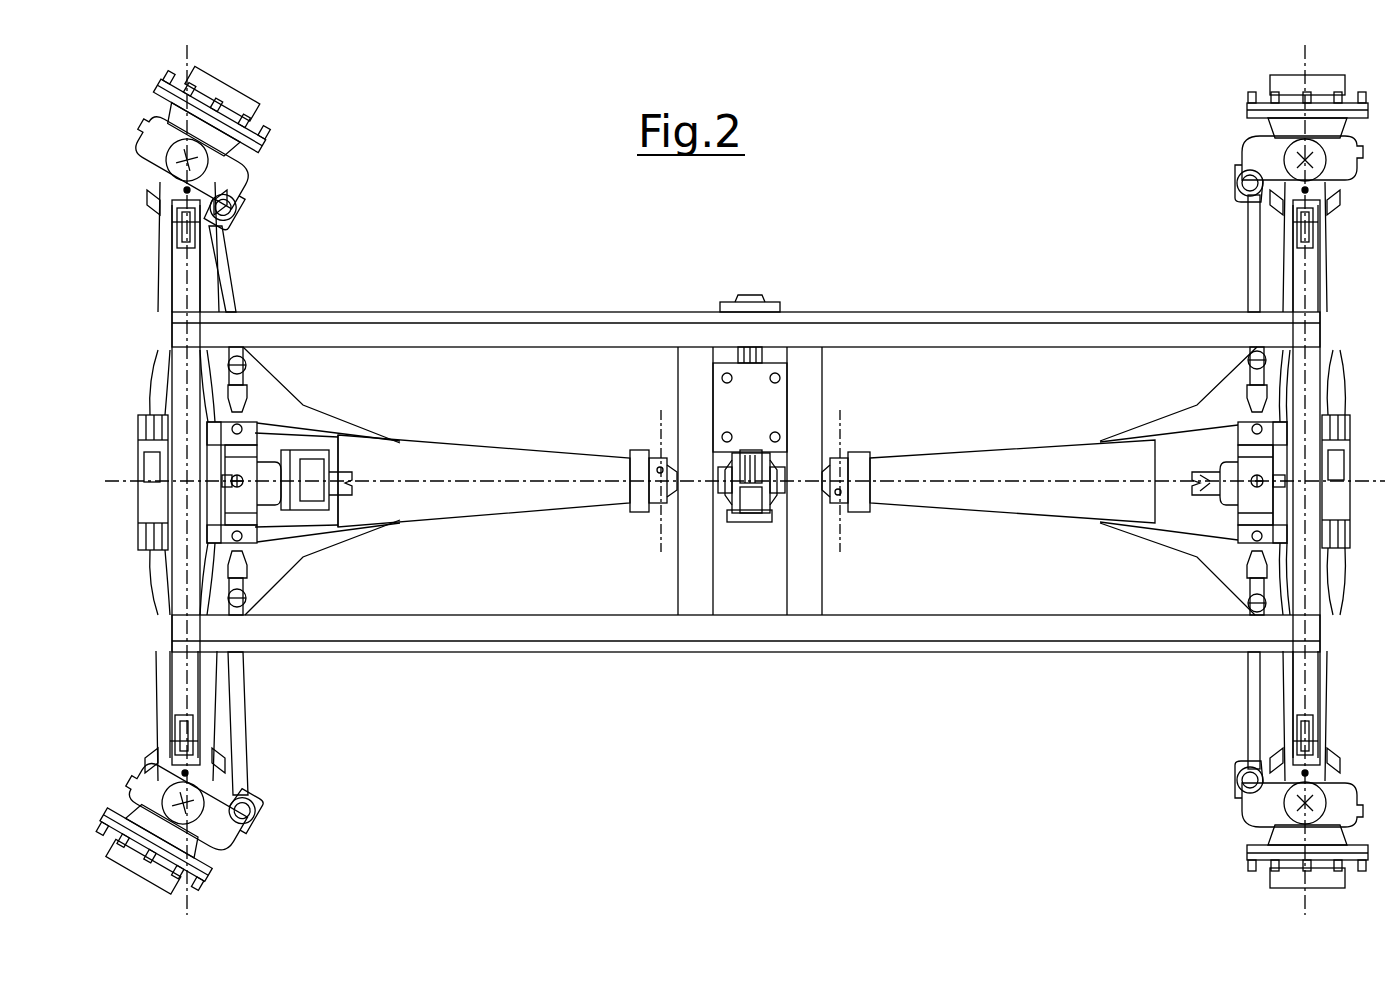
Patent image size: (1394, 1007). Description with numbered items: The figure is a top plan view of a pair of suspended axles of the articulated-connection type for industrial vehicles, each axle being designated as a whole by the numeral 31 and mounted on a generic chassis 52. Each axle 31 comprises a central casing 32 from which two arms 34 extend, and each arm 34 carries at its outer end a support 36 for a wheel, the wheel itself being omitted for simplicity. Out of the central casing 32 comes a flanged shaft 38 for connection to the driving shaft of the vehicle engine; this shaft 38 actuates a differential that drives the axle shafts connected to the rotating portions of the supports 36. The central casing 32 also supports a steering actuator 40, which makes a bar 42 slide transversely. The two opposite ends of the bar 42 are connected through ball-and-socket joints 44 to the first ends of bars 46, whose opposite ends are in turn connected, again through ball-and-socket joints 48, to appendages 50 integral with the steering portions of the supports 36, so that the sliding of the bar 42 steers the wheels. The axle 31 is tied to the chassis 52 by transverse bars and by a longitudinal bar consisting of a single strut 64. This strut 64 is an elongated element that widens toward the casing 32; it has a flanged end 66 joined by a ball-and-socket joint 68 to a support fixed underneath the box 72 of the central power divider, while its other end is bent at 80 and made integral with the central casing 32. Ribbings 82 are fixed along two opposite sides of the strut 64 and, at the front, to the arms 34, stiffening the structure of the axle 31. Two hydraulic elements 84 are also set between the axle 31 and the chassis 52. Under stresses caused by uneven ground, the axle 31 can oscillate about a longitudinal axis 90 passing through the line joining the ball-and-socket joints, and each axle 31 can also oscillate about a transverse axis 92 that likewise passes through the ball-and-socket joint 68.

The axle 31 is at (125, 512).
The central casing 32 is at (1342, 505).
The arm 34 is at (1330, 315).
The support 36 is at (1350, 137).
The flanged shaft 38 is at (1210, 500).
The steering actuator 40 is at (1238, 427).
The bar 42 is at (1250, 370).
The ball-and-socket joint 44 is at (1257, 360).
The bar 46 is at (1253, 255).
The ball-and-socket joint 48 is at (1240, 180).
The appendage 50 is at (1258, 145).
The chassis 52 is at (890, 640).
The strut 64 is at (533, 505).
The flanged end 66 is at (865, 458).
The ball-and-socket joint 68 is at (870, 495).
The box 72 is at (748, 520).
The bent end 80 is at (1155, 505).
The ribbing 82 is at (281, 396).
The hydraulic element 84 is at (197, 249).
The longitudinal axis 90 is at (451, 482).
The transverse axis 92 is at (655, 535).